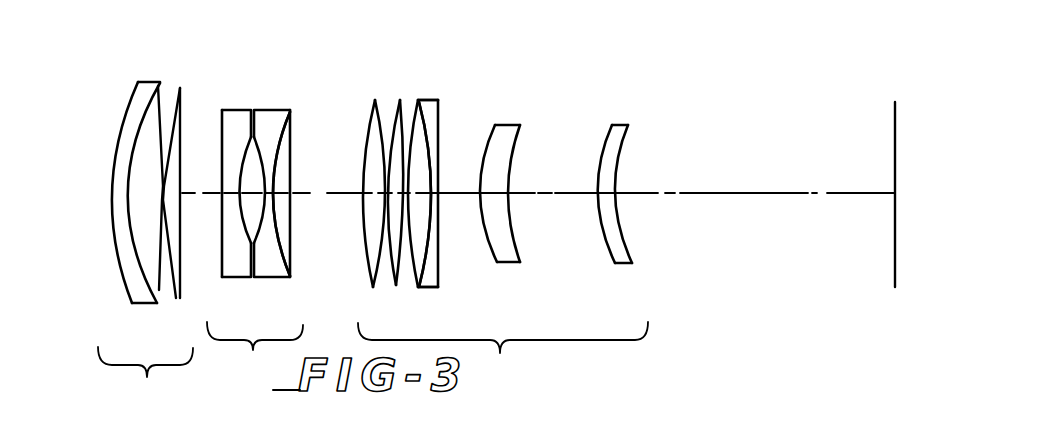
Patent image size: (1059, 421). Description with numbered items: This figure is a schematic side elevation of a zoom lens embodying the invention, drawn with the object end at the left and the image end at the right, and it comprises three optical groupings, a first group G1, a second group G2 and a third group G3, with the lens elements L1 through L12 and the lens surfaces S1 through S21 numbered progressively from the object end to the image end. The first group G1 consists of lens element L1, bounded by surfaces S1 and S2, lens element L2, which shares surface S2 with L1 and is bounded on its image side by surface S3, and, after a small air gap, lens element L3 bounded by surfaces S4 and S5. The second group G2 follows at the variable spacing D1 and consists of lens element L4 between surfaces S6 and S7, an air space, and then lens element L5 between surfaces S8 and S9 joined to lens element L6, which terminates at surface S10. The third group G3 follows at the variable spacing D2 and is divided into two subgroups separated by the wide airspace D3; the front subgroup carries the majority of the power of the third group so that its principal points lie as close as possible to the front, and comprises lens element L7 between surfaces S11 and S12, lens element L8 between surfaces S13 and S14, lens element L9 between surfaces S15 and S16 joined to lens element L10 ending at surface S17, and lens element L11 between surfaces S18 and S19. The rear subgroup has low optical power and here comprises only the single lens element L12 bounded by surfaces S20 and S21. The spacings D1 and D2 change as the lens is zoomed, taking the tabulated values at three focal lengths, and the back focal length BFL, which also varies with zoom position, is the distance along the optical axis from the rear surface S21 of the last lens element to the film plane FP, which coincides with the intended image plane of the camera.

The first lens element L1 is at (110, 169).
The second lens element L2 is at (147, 183).
The third lens element L3 is at (191, 200).
The fourth lens element L4 is at (239, 188).
The fifth lens element L5 is at (288, 178).
The sixth lens element L6 is at (303, 192).
The seventh lens element L7 is at (353, 190).
The eighth lens element L8 is at (420, 188).
The ninth lens element L9 is at (444, 193).
The tenth lens element L10 is at (454, 168).
The eleventh lens element L11 is at (528, 190).
The twelfth lens element L12 is at (637, 198).
The lens surface S1 is at (115, 245).
The lens surface S2 is at (143, 252).
The lens surface S3 is at (157, 295).
The lens surface S4 is at (170, 288).
The lens surface S5 is at (180, 245).
The lens surface S6 is at (222, 265).
The lens surface S7 is at (243, 215).
The lens surface S8 is at (259, 218).
The lens surface S9 is at (283, 243).
The lens surface S10 is at (290, 213).
The lens surface S11 is at (365, 263).
The lens surface S12 is at (380, 277).
The lens surface S13 is at (395, 285).
The lens surface S14 is at (403, 279).
The lens surface S15 is at (412, 260).
The lens surface S16 is at (427, 243).
The lens surface S17 is at (438, 212).
The lens surface S18 is at (490, 260).
The lens surface S19 is at (510, 231).
The lens surface S20 is at (608, 258).
The lens surface S21 is at (637, 257).
The first lens group G1 is at (139, 219).
The second lens group G2 is at (268, 218).
The third lens group G3 is at (506, 214).
The spacing between first and second groups D1 is at (207, 175).
The spacing between second and third groups D2 is at (324, 179).
The wide airspace D3 is at (555, 179).
The back focal length BFL is at (759, 179).
The film plane FP is at (895, 128).